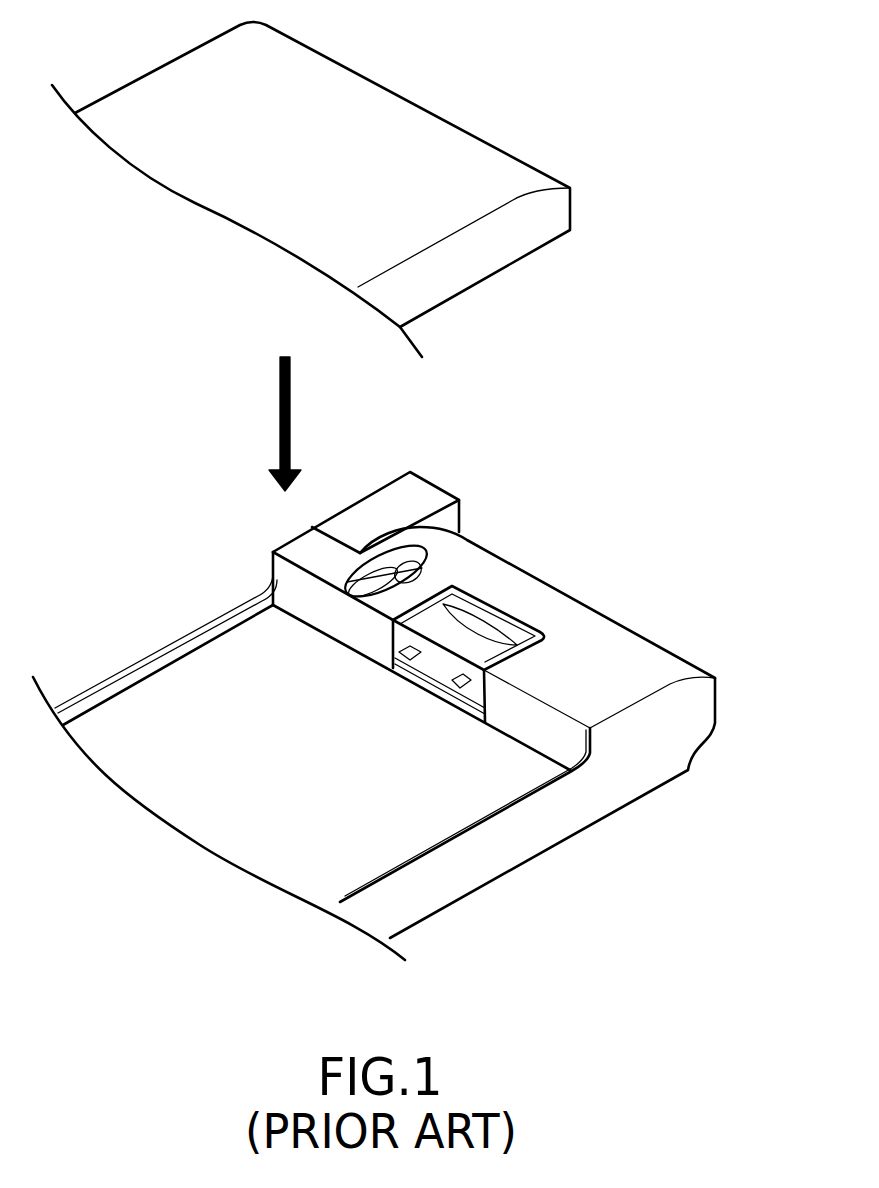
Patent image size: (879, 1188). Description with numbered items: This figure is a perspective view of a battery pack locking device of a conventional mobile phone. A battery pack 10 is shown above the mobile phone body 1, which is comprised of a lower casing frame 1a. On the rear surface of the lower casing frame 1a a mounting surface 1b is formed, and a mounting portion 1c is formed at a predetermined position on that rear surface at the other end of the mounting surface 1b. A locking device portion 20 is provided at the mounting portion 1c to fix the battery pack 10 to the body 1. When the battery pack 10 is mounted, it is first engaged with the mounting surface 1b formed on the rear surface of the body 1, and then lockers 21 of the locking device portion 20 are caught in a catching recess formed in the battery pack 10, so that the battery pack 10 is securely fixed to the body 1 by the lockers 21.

The mobile phone body 1 is at (640, 808).
The lower casing frame 1a is at (588, 638).
The mounting surface 1b is at (420, 822).
The mounting portion 1c is at (473, 597).
The battery pack 10 is at (587, 190).
The locking device portion 20 is at (513, 618).
The locker 21 is at (455, 683).